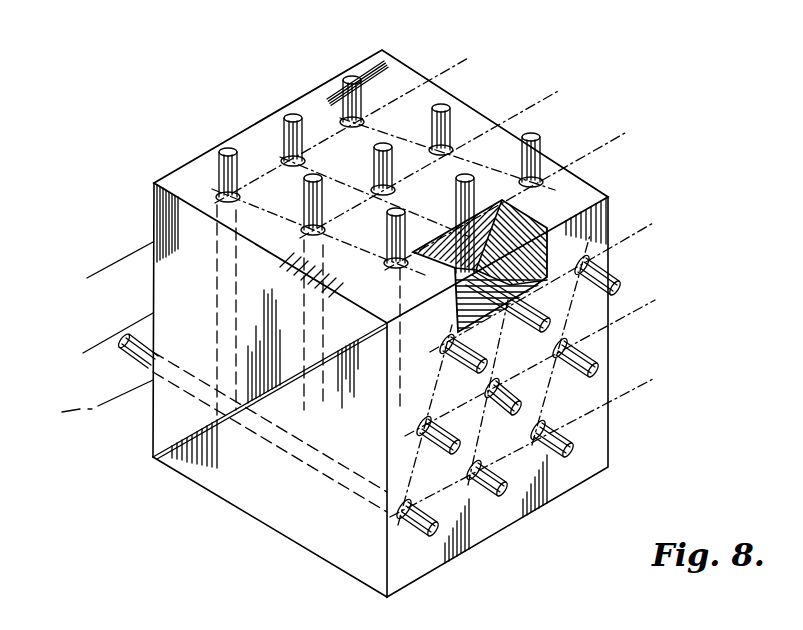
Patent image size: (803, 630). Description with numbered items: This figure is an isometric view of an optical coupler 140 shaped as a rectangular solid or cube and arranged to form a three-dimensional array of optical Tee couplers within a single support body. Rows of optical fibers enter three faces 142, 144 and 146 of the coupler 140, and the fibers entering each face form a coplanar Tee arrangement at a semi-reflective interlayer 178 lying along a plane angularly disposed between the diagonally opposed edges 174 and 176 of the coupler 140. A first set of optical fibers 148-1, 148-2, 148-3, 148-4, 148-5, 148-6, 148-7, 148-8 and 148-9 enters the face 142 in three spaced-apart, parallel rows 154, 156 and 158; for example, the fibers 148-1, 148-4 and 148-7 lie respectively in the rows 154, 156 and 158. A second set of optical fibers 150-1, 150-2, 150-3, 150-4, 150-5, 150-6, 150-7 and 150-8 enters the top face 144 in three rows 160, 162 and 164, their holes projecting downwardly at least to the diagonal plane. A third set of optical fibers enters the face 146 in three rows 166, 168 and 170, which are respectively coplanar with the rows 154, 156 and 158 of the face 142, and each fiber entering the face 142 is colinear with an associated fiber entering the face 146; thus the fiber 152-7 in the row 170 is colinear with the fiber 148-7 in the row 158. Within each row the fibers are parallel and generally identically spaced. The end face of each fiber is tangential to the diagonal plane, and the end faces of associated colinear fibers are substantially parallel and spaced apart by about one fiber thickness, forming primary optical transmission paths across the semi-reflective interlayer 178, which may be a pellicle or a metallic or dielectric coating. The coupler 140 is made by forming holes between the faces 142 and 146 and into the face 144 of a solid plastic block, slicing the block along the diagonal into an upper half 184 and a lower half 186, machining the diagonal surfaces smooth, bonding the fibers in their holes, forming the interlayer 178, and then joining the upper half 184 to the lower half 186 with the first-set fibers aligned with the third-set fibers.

The optical coupler 140 is at (392, 82).
The face 142 is at (567, 487).
The face 144 is at (330, 98).
The face 146 is at (153, 275).
The optical fiber 148-1 is at (462, 369).
The optical fiber 148-2 is at (532, 333).
The optical fiber 148-3 is at (622, 274).
The optical fiber 148-4 is at (450, 453).
The optical fiber 148-5 is at (498, 416).
The optical fiber 148-6 is at (598, 356).
The optical fiber 148-7 is at (425, 535).
The optical fiber 148-8 is at (491, 497).
The optical fiber 148-9 is at (572, 438).
The optical fiber 150-1 is at (387, 242).
The optical fiber 150-2 is at (456, 200).
The optical fiber 150-3 is at (540, 152).
The optical fiber 150-4 is at (304, 206).
The optical fiber 150-5 is at (374, 165).
The optical fiber 150-6 is at (452, 110).
The optical fiber 150-7 is at (216, 157).
The optical fiber 150-8 is at (293, 118).
The optical fiber 152-7 is at (124, 358).
The row 154 is at (655, 222).
The row 156 is at (655, 300).
The row 158 is at (655, 378).
The row 160 is at (470, 57).
The row 162 is at (560, 90).
The row 164 is at (625, 133).
The row 166 is at (104, 266).
The row 168 is at (118, 331).
The row 170 is at (88, 400).
The edge 174 is at (606, 209).
The edge 176 is at (153, 458).
The semi-reflective interlayer 178 is at (602, 191).
The upper half 184 is at (170, 205).
The lower half 186 is at (328, 553).